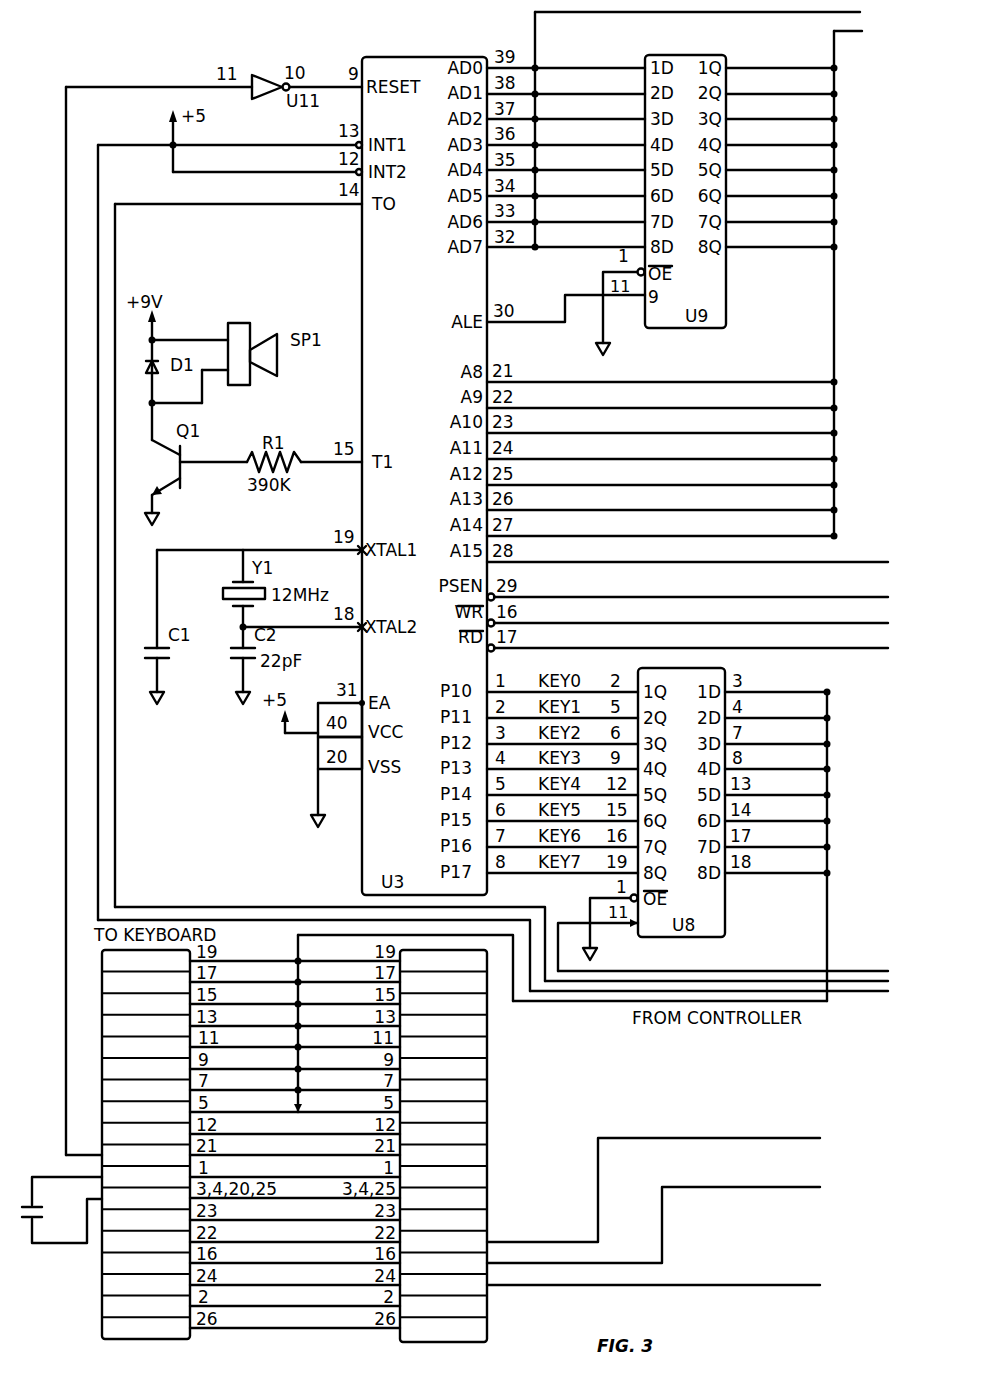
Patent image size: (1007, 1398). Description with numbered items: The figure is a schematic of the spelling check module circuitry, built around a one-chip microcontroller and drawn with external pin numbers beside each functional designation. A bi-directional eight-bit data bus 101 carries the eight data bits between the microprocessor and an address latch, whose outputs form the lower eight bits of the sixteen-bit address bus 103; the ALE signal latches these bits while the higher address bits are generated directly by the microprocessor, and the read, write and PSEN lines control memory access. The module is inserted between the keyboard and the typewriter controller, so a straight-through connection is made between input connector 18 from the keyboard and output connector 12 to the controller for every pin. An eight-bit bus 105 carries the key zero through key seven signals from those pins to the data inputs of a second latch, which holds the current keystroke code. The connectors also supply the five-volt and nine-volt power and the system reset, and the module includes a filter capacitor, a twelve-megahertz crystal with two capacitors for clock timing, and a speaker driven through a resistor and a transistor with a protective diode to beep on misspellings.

The output connector 12 is at (487, 962).
The input connector 18 is at (102, 962).
The bi-directional 8-bit data bus 101 is at (533, 30).
The 16-bit address bus 103 is at (834, 40).
The 8-bit keystroke data bus 105 is at (617, 1003).